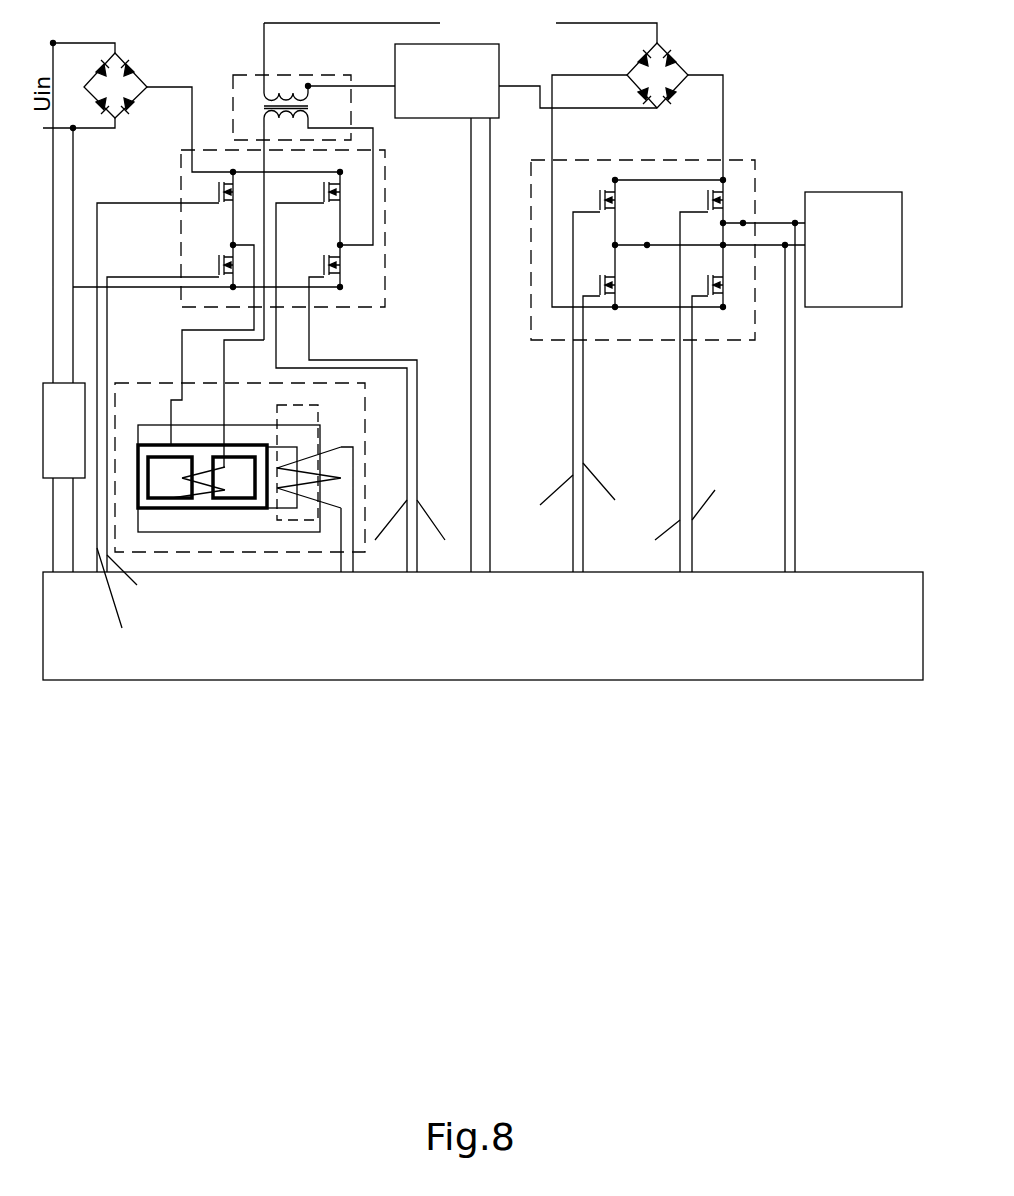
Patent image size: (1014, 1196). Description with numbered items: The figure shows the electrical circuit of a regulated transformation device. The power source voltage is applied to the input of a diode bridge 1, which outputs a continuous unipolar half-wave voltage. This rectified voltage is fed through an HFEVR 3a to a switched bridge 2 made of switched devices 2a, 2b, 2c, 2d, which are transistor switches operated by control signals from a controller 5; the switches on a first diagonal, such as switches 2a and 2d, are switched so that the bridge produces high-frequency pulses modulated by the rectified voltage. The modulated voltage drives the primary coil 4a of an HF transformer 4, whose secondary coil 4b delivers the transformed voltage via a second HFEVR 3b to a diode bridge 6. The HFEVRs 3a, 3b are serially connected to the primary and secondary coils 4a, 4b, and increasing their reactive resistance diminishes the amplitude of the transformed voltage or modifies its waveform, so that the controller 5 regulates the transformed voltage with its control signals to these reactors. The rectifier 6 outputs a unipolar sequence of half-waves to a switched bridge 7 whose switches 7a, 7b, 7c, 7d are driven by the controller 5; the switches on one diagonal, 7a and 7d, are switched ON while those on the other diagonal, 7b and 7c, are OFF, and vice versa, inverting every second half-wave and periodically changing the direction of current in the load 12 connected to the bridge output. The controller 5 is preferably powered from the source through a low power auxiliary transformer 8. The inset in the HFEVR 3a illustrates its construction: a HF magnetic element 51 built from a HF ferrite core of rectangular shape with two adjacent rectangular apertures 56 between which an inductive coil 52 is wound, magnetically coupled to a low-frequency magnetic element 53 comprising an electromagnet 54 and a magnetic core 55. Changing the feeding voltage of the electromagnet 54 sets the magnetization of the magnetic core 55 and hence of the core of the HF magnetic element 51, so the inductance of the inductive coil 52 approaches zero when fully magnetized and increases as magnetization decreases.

The diode bridge 1 is at (182, 43).
The switched bridge 2 is at (180, 162).
The switched device 2a is at (180, 371).
The switched device 2b is at (341, 371).
The switched device 2c is at (171, 408).
The switched device 2d is at (352, 408).
The HFEVR 3a is at (170, 382).
The HFEVR 3b is at (526, 308).
The HF transformer 4 is at (317, 181).
The primary coil 4a is at (286, 128).
The secondary coil 4b is at (286, 87).
The controller 5 is at (575, 682).
The diode bridge 6 is at (690, 53).
The switched bridge 7 is at (745, 168).
The switch 7a is at (591, 375).
The switch 7b is at (699, 375).
The switch 7c is at (595, 408).
The switch 7d is at (703, 408).
The low power auxiliary transformer 8 is at (64, 430).
The load 12 is at (853, 249).
The HF magnetic element 51 is at (150, 448).
The inductive coil 52 is at (200, 477).
The low-frequency magnetic element 53 is at (293, 520).
The electromagnet 54 is at (290, 465).
The magnetic core 55 is at (245, 435).
The rectangular apertures 56 is at (160, 488).